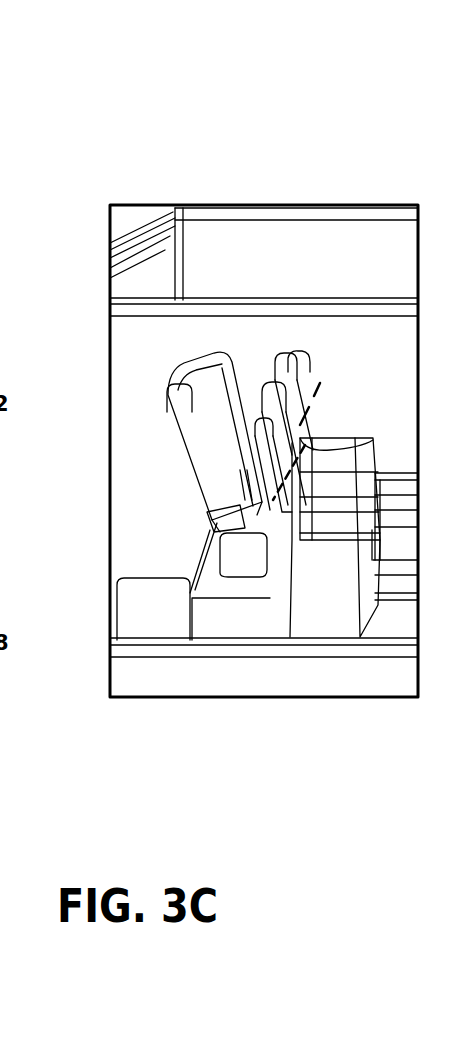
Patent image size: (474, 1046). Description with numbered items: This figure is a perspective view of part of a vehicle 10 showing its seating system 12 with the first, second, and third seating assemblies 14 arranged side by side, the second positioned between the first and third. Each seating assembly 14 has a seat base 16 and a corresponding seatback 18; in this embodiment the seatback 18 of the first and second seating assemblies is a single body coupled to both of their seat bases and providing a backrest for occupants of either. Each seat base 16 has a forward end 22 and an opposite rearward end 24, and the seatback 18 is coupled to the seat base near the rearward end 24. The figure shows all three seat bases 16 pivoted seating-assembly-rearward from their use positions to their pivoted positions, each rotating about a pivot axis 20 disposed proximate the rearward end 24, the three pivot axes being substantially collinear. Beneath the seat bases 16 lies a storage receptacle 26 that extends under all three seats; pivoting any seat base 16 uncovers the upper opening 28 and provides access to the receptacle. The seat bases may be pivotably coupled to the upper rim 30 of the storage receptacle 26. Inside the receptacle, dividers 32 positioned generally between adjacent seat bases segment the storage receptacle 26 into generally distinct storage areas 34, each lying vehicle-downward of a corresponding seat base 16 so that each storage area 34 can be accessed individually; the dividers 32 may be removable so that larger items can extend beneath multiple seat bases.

The vehicle 10 is at (332, 128).
The seating system 12 is at (106, 207).
The seating assembly 14 is at (173, 372).
The seat base 16 is at (275, 370).
The seatback 18 is at (203, 335).
The pivot axis 20 is at (262, 600).
The forward end 22 is at (320, 380).
The rearward end 24 is at (170, 625).
The storage receptacle 26 is at (262, 545).
The upper opening 28 is at (372, 530).
The upper rim 30 is at (290, 580).
The divider 32 is at (342, 743).
The storage area 34 is at (225, 727).